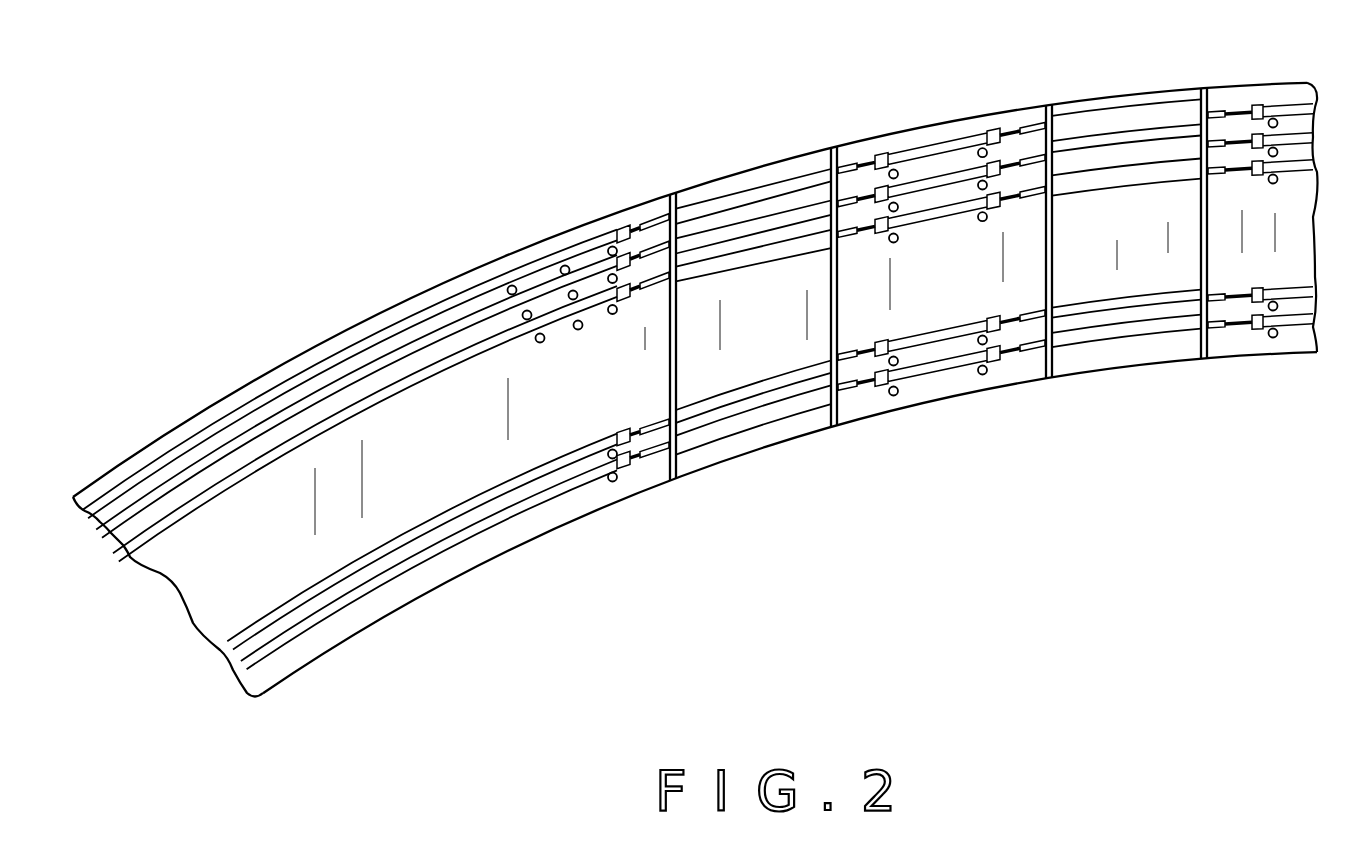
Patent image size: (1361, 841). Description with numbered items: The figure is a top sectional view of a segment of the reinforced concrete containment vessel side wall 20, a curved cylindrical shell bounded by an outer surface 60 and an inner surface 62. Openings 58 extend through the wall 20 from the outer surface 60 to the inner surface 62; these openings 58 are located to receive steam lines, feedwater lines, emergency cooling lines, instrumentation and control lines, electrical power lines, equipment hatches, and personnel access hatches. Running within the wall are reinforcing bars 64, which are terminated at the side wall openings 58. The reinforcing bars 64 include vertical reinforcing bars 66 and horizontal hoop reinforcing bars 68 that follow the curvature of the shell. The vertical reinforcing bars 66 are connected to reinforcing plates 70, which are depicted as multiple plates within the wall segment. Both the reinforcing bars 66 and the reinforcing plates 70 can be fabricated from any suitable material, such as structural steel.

The RCCV side wall 20 is at (280, 573).
The openings 58 is at (765, 165).
The outer surface 60 is at (147, 447).
The inner surface 62 is at (323, 655).
The reinforcing bars 64 is at (132, 556).
The vertical reinforcing bars 66 is at (544, 342).
The horizontal hoop reinforcing bars 68 is at (397, 322).
The reinforcing plates 70 is at (742, 262).